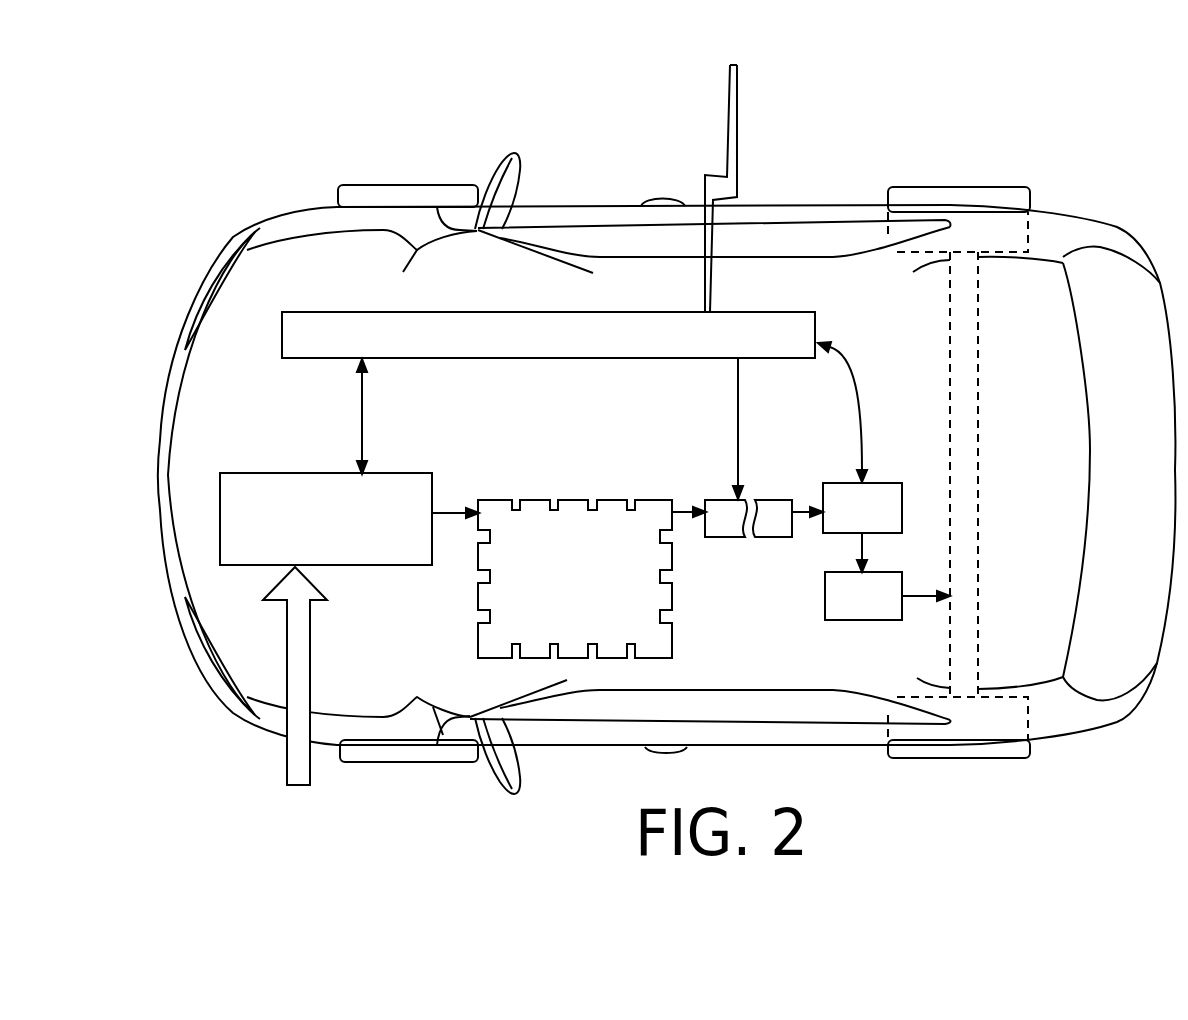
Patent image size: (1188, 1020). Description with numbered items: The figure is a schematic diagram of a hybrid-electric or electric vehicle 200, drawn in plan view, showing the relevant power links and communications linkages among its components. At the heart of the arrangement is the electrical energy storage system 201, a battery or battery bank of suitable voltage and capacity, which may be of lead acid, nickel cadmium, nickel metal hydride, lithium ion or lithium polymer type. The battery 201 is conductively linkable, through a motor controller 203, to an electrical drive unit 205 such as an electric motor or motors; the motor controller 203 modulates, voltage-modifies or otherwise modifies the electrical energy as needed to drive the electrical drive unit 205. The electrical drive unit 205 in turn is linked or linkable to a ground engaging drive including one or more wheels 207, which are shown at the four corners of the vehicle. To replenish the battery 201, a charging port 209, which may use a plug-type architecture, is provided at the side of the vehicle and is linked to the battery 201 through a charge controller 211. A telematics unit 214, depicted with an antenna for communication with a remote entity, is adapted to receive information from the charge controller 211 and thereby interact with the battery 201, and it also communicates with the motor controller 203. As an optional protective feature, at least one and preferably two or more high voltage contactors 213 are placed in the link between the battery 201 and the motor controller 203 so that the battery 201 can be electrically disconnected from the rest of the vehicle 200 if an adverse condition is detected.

The vehicle 200 is at (782, 186).
The electrical energy storage system 201 is at (598, 584).
The motor controller 203 is at (882, 521).
The electrical drive unit 205 is at (883, 610).
The wheels 207 is at (970, 200).
The charging port 209 is at (284, 785).
The charge controller 211 is at (345, 531).
The high voltage contactors 213 is at (727, 498).
The telematics unit 214 is at (568, 350).